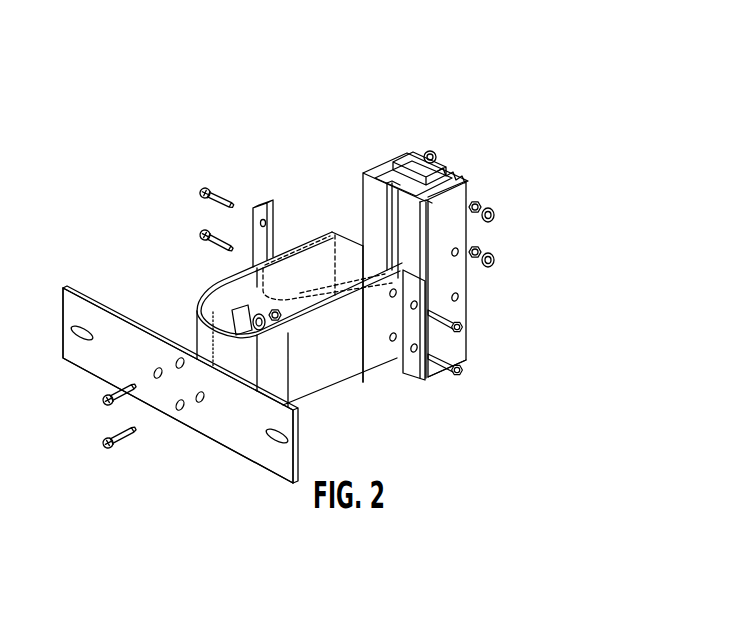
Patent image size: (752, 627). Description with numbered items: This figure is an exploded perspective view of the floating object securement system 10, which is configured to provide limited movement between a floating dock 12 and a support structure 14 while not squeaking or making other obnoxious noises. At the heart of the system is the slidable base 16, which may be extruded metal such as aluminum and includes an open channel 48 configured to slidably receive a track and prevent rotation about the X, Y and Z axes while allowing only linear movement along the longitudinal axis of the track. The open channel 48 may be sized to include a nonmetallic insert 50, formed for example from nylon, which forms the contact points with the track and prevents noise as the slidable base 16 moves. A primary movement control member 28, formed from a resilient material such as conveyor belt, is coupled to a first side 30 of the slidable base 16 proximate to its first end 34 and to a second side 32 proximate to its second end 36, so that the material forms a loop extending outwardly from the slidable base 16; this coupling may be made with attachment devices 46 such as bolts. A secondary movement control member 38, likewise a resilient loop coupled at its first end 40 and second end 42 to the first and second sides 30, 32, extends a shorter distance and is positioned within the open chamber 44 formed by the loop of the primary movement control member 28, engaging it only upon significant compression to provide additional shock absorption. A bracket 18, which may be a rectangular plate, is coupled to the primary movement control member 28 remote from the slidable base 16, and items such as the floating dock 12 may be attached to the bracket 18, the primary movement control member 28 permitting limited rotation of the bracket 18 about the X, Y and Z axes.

The floating object securement system 10 is at (310, 313).
The floating dock 12 is at (78, 292).
The support structure 14 is at (403, 54).
The slidable base 16 is at (468, 303).
The bracket 18 is at (228, 427).
The primary movement control member 28 is at (313, 383).
The first side 30 is at (360, 246).
The second side 32 is at (450, 287).
The first end 34 is at (337, 232).
The second end 36 is at (427, 273).
The secondary movement control member 38 is at (310, 233).
The first end 40 is at (362, 173).
The second end 42 is at (403, 270).
The open chamber 44 is at (253, 270).
The attachment devices 46 is at (460, 373).
The open channel 48 is at (433, 163).
The nonmetallic insert 50 is at (447, 173).